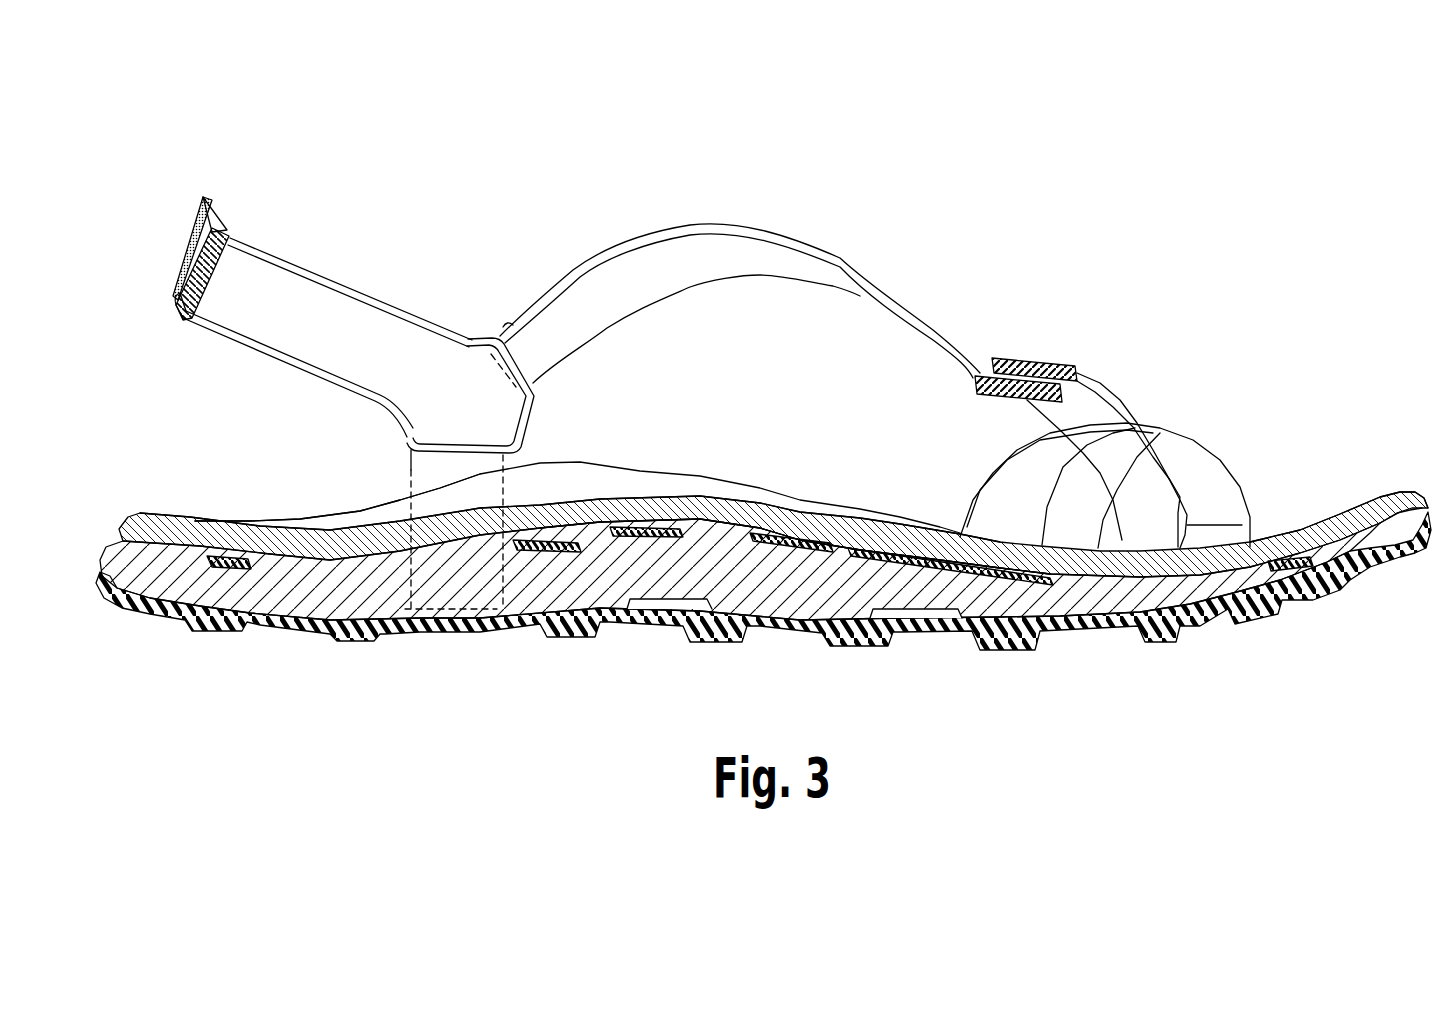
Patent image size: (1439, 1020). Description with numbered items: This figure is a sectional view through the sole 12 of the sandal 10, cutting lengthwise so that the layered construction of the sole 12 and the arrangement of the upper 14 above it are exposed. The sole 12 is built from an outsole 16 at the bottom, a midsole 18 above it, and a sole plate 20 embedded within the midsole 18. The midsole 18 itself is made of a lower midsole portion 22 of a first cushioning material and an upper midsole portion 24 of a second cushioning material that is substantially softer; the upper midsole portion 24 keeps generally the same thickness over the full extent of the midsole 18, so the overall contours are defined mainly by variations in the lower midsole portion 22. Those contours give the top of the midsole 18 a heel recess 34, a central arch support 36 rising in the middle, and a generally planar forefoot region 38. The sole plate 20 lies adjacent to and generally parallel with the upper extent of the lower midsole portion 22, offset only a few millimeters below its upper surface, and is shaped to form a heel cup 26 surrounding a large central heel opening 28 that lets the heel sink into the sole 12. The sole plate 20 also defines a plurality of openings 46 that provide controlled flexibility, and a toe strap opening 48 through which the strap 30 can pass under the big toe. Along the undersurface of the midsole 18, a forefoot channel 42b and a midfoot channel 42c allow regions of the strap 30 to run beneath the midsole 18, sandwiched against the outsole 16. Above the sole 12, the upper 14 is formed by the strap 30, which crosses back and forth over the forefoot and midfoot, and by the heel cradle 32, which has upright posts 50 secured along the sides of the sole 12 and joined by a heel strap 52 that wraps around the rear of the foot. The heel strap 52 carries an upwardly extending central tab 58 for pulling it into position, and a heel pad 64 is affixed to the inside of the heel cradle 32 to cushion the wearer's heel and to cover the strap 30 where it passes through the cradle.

The sandal 10 is at (1165, 168).
The sole 12 is at (283, 636).
The upper 14 is at (818, 236).
The outsole 16 is at (536, 630).
The midsole 18 is at (815, 518).
The sole plate 20 is at (652, 503).
The lower midsole portion 22 is at (843, 556).
The upper midsole portion 24 is at (600, 527).
The heel cup 26 is at (230, 556).
The heel opening 28 is at (514, 546).
The strap 30 is at (882, 290).
The heel cradle 32 is at (315, 272).
The heel recess 34 is at (333, 518).
The central arch support 36 is at (647, 492).
The forefoot region 38 is at (1140, 453).
The forefoot channel 42b is at (912, 616).
The midfoot channel 42c is at (655, 612).
The openings 46 is at (573, 535).
The toe strap opening 48 is at (1262, 570).
The upright posts 50 is at (420, 471).
The heel strap 52 is at (192, 271).
The central tab 58 is at (218, 222).
The heel pad 64 is at (405, 345).